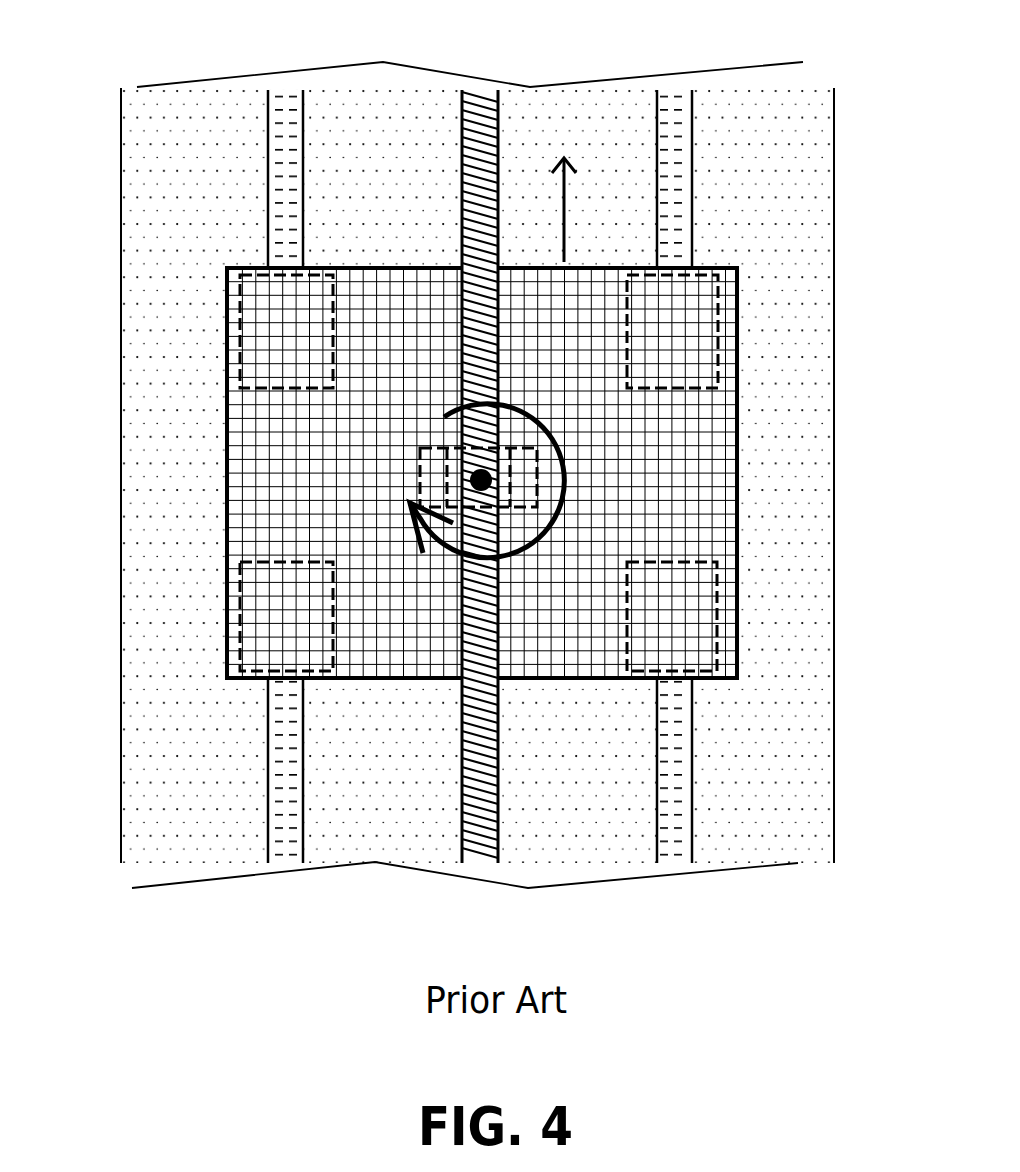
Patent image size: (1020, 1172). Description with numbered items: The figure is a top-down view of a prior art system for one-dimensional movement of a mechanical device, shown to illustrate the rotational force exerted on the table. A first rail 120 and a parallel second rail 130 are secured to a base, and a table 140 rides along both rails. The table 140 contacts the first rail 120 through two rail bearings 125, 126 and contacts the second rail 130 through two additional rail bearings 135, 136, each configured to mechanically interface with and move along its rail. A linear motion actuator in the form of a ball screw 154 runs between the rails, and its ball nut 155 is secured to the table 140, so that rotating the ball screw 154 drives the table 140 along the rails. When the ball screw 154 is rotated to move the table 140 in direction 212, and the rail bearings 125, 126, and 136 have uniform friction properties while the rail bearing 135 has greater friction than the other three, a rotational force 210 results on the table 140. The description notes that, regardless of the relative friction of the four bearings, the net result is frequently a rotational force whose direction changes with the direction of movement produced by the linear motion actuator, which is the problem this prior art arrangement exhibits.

The first rail 120 is at (288, 835).
The second rail 130 is at (680, 843).
The ball screw 154 is at (502, 100).
The table 140 is at (695, 450).
The rail bearing 125 is at (240, 643).
The rail bearing 126 is at (240, 353).
The rail bearing 135 is at (717, 620).
The rail bearing 136 is at (718, 322).
The ball nut 155 is at (420, 468).
The rotational force 210 is at (565, 493).
The direction 212 is at (568, 213).